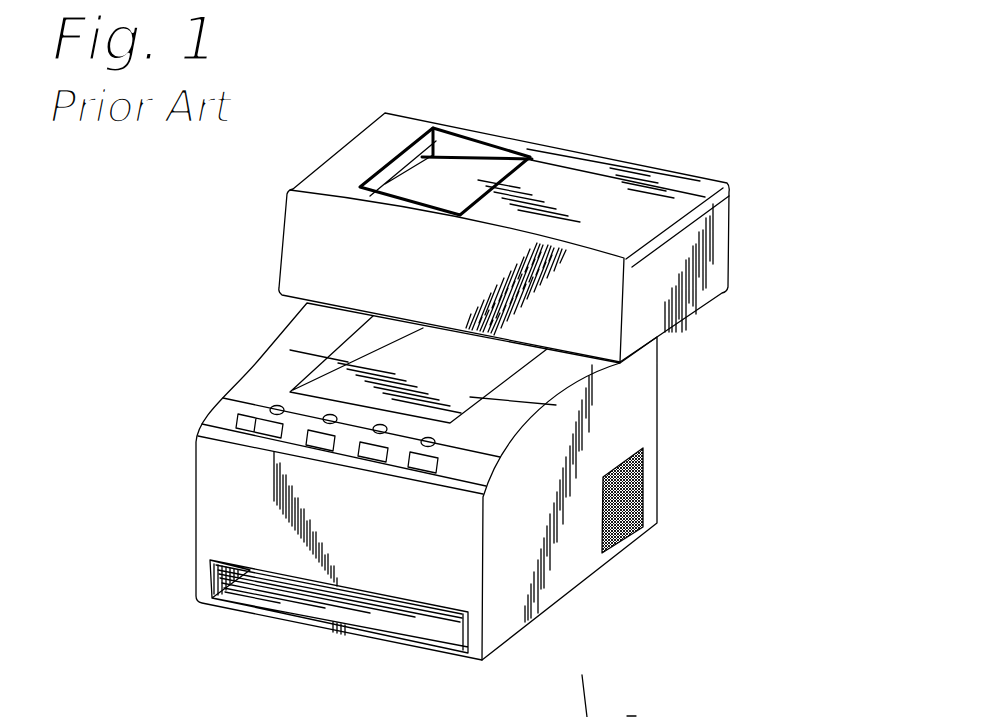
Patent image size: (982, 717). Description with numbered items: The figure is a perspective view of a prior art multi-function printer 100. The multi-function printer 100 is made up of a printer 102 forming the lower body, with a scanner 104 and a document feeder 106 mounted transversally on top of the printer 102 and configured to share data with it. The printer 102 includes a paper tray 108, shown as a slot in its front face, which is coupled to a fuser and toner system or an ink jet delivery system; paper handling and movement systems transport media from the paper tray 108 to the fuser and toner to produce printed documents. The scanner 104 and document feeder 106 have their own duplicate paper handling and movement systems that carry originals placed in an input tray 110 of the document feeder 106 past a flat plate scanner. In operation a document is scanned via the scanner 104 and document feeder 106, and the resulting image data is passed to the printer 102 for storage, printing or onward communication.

The multi-function printer 100 is at (696, 70).
The printer 102 is at (661, 404).
The scanner 104 is at (729, 268).
The document feeder 106 is at (560, 137).
The paper tray 108 is at (290, 603).
The input tray 110 is at (477, 180).